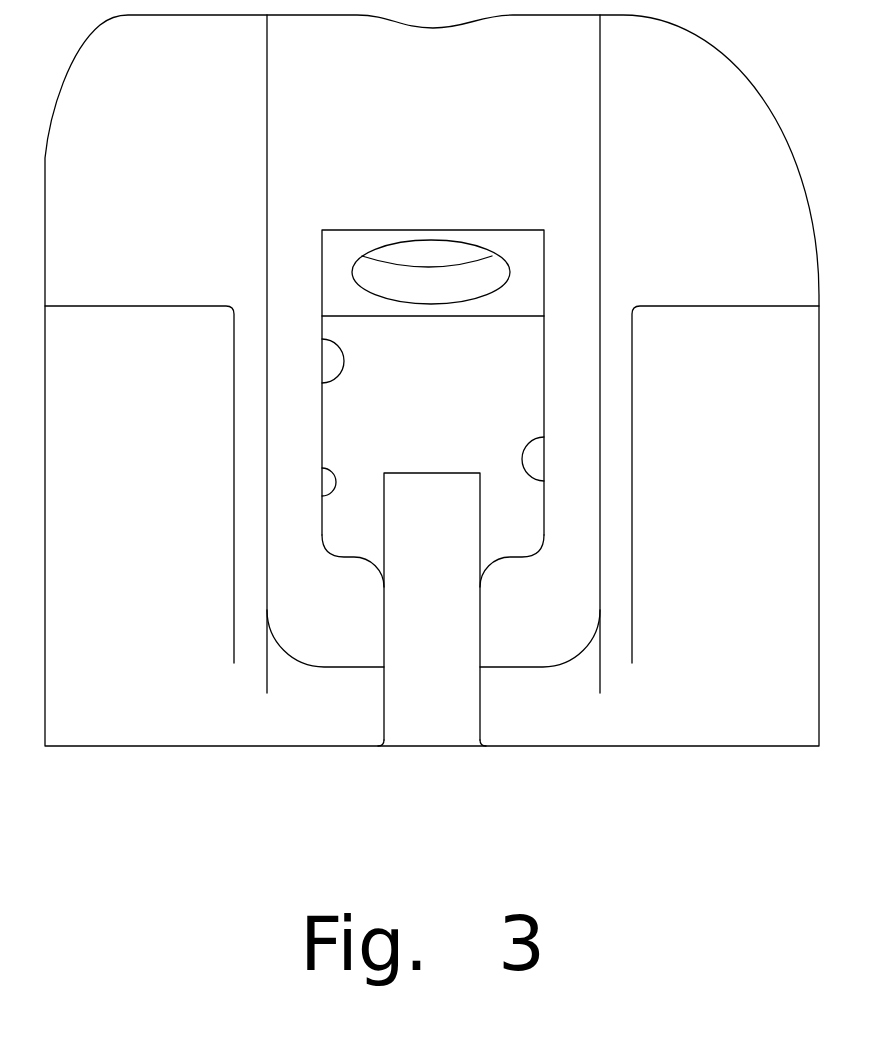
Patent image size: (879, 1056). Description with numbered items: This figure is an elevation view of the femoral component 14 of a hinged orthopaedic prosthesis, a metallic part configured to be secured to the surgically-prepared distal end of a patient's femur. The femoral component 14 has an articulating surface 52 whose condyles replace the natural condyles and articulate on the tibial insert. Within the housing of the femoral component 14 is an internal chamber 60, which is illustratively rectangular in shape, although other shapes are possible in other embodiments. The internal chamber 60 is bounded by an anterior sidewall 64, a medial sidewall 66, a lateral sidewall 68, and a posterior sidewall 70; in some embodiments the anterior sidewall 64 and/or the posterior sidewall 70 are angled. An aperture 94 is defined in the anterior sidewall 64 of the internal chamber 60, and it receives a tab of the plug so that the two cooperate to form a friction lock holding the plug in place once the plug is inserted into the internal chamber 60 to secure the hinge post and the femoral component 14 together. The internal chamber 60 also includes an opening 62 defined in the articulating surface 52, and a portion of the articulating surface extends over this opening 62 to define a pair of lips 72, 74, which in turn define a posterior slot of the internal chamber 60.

The femoral component 14 is at (752, 87).
The articulating surface 52 is at (293, 285).
The internal chamber 60 is at (500, 383).
The anterior sidewall 64 is at (530, 255).
The aperture 94 is at (433, 255).
The medial sidewall 66 is at (320, 338).
The opening 62 is at (317, 468).
The lateral sidewall 68 is at (547, 482).
The posterior sidewall 70 is at (403, 740).
The lip 72 is at (367, 636).
The lip 74 is at (497, 636).